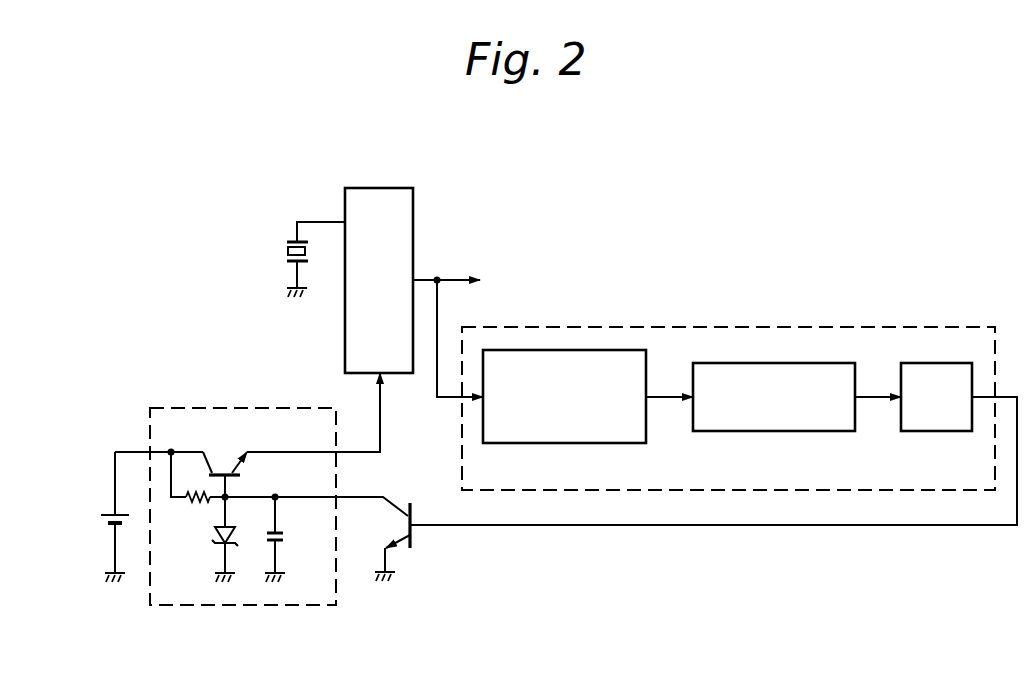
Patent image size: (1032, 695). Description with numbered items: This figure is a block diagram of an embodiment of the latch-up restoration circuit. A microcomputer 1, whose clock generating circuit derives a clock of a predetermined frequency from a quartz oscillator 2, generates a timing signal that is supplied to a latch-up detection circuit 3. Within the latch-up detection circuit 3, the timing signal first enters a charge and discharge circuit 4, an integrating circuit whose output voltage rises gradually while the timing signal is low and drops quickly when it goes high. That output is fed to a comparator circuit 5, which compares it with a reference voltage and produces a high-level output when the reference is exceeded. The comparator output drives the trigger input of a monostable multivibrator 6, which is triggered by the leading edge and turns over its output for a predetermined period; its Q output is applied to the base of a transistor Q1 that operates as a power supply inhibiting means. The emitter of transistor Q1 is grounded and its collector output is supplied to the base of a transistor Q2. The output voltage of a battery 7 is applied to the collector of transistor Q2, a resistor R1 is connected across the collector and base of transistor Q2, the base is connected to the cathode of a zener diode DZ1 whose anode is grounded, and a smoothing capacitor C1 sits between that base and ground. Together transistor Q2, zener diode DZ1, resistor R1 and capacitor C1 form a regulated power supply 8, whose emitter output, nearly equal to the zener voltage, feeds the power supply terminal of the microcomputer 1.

The microcomputer 1 is at (345, 341).
The quartz oscillator 2 is at (289, 254).
The latch-up detection circuit 3 is at (705, 326).
The charge and discharge circuit 4 is at (568, 444).
The comparator circuit 5 is at (765, 431).
The monostable multivibrator 6 is at (930, 431).
The battery 7 is at (113, 522).
The regulated power supply 8 is at (263, 606).
The transistor Q1 is at (396, 527).
The transistor Q2 is at (223, 464).
The resistor R1 is at (193, 503).
The zener diode DZ1 is at (219, 543).
The capacitor C1 is at (285, 545).